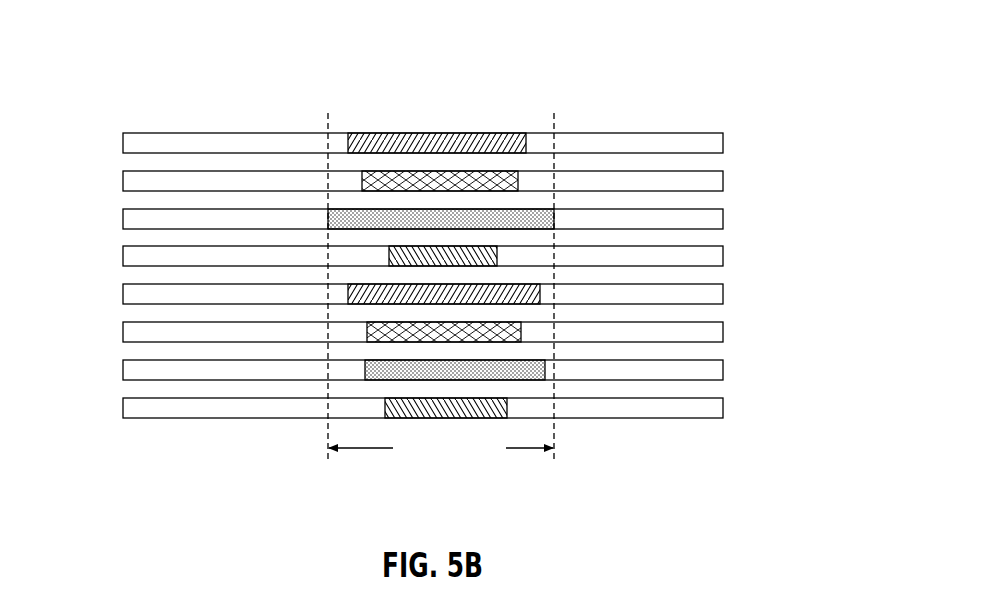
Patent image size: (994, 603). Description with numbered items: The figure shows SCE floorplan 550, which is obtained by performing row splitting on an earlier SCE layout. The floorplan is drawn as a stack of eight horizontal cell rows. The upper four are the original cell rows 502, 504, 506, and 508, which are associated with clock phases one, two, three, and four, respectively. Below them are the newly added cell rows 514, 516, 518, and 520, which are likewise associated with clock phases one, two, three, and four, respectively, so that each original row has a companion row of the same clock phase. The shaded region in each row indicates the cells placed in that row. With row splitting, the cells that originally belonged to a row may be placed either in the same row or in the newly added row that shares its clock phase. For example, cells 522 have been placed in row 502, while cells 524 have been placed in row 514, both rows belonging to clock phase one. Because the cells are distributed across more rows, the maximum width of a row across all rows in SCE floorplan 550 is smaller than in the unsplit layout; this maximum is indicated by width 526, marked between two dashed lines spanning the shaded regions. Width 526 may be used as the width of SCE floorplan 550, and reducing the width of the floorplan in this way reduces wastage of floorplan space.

The SCE floorplan 550 is at (744, 57).
The cell row 502 is at (386, 109).
The cell row 504 is at (122, 179).
The cell row 506 is at (122, 217).
The cell row 508 is at (122, 254).
The cell row 514 is at (386, 185).
The cell row 516 is at (122, 330).
The cell row 518 is at (122, 368).
The cell row 520 is at (122, 406).
The cells 522 is at (391, 134).
The cells 524 is at (524, 286).
The width 526 is at (441, 448).